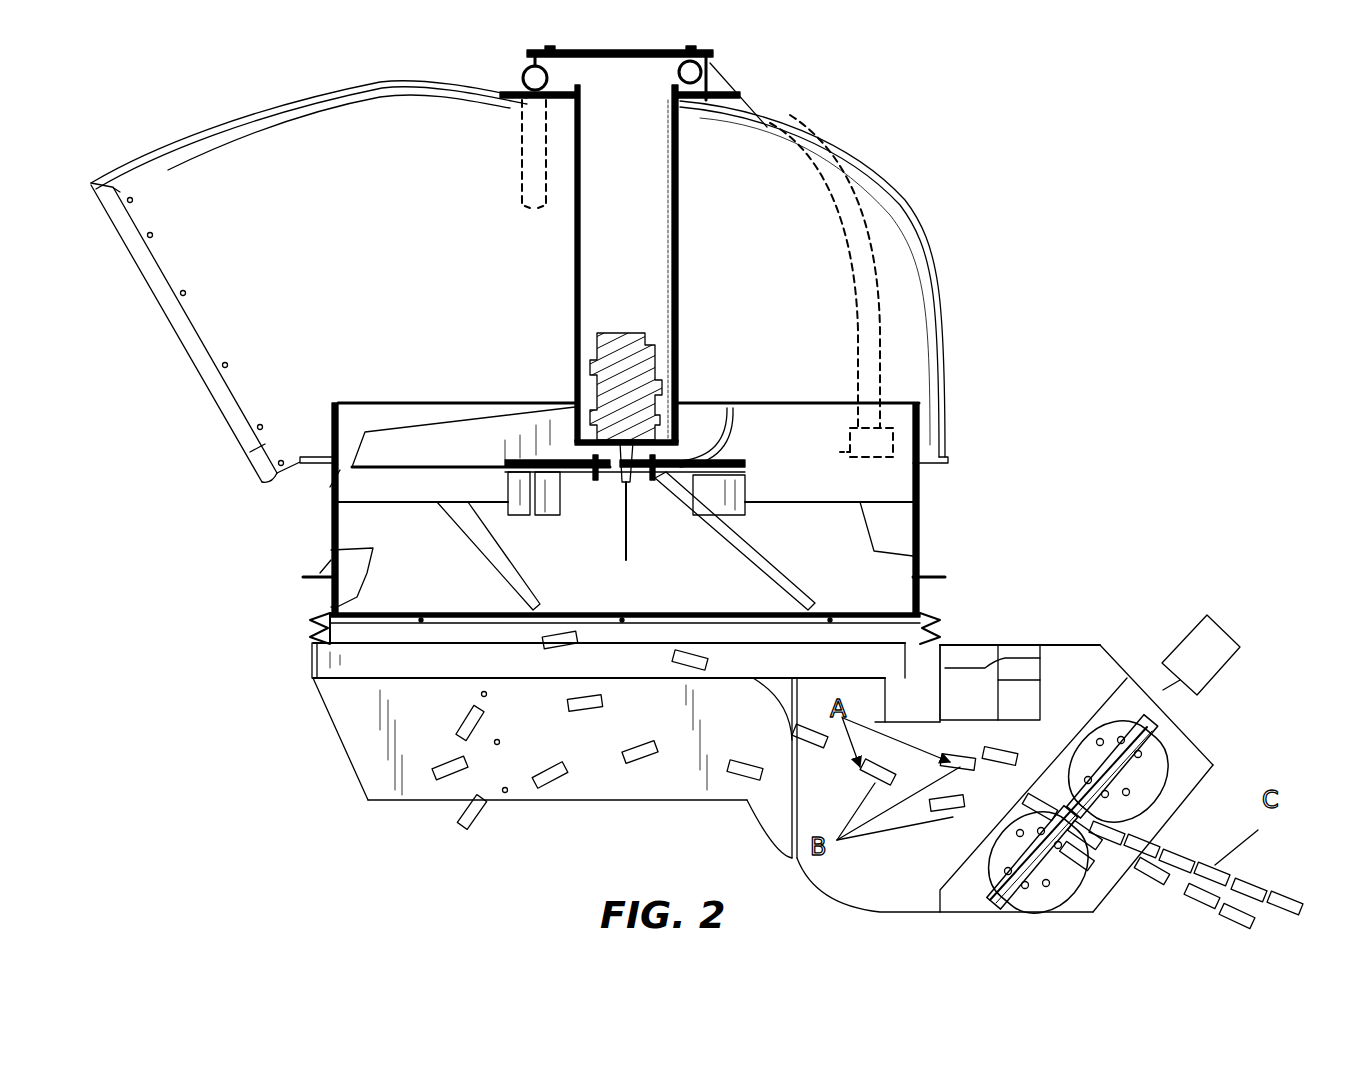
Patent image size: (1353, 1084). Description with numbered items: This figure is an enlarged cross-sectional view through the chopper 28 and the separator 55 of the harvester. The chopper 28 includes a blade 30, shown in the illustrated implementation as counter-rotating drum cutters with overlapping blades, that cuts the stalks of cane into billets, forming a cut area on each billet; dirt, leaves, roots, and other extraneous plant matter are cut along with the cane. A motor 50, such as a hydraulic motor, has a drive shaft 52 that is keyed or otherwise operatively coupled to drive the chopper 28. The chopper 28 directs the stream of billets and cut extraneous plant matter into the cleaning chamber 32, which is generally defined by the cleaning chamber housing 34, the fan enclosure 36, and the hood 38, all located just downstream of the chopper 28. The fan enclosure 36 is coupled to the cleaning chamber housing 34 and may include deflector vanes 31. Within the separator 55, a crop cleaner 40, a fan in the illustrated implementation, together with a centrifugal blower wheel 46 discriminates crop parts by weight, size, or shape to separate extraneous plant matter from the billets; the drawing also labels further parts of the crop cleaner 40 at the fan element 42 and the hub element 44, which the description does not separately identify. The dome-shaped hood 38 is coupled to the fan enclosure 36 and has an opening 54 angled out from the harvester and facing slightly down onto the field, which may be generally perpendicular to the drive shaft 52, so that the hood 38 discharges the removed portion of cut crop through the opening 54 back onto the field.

The chopper 28 is at (1172, 765).
The blade 30 is at (1118, 785).
The deflector vanes 31 is at (472, 542).
The cleaning chamber 32 is at (535, 702).
The cleaning chamber housing 34 is at (325, 705).
The fan enclosure 36 is at (330, 512).
The hood 38 is at (893, 178).
The crop cleaner 40 is at (516, 393).
The deflector 42 is at (505, 437).
The drive screw 44 is at (577, 457).
The centrifugal blower wheel 46 is at (692, 507).
The motor 50 is at (1183, 640).
The drive shaft 52 is at (623, 477).
The opening 54 is at (160, 313).
The separator 55 is at (1135, 187).